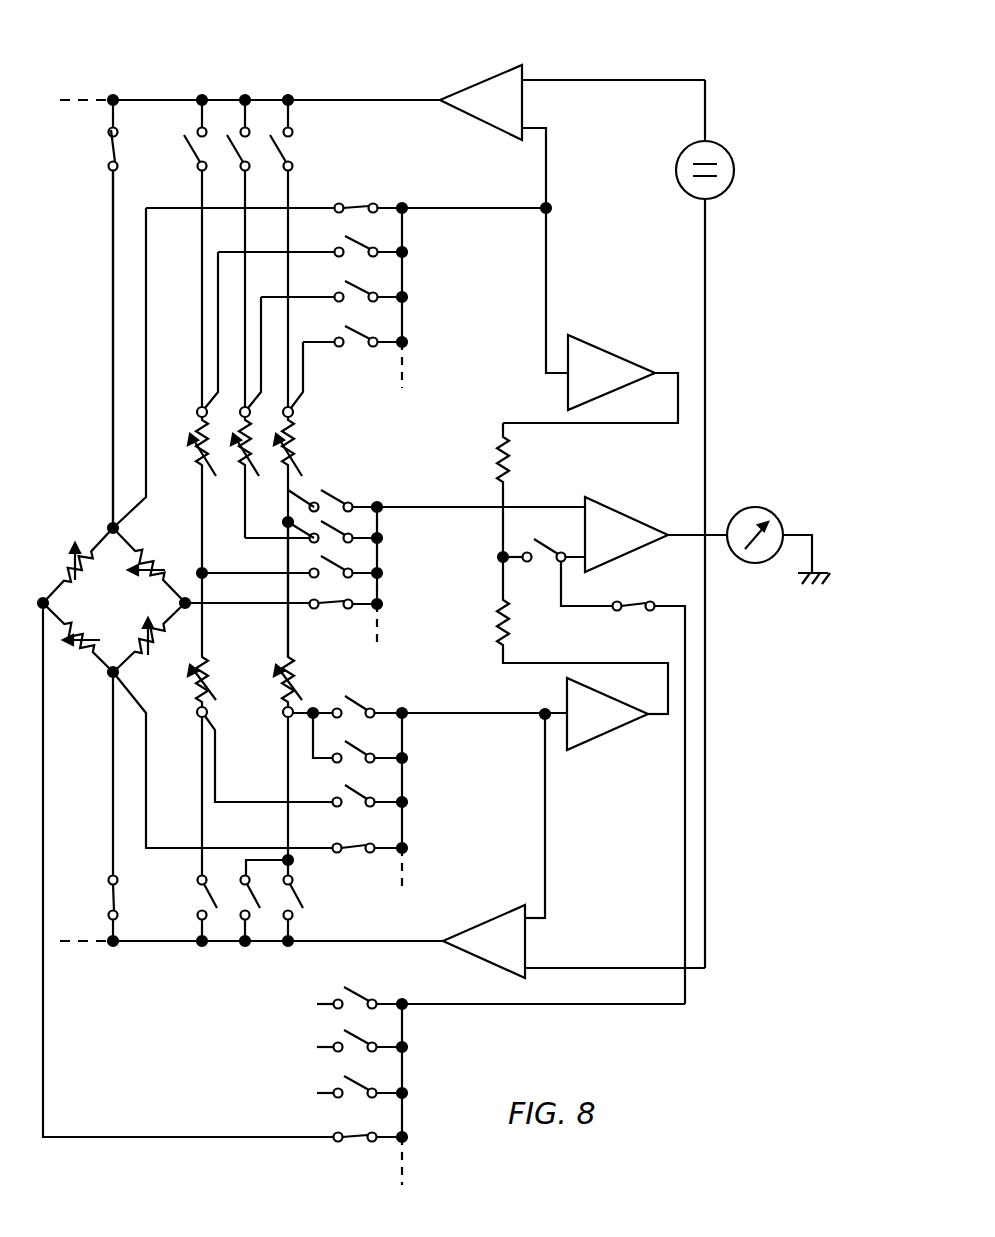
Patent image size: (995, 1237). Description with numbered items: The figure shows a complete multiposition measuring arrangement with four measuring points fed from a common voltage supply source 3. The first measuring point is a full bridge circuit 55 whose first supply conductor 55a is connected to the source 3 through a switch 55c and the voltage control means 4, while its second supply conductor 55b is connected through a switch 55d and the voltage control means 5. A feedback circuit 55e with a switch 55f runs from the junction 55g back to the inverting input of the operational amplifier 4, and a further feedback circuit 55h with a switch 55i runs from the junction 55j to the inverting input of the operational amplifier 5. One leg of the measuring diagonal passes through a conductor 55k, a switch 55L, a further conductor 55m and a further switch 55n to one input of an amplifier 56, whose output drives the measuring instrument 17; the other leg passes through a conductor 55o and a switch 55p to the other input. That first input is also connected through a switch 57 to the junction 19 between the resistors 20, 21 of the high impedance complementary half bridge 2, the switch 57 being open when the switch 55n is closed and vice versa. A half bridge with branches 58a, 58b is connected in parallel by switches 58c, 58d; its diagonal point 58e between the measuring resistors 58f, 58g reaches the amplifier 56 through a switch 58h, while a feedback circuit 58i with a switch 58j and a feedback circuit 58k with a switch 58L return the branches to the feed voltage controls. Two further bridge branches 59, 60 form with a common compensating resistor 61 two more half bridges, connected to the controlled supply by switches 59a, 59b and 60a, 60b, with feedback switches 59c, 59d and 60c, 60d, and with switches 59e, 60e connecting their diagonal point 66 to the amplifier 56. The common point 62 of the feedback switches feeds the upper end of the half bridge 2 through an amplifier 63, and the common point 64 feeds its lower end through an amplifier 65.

The high impedance complementary half bridge 2 is at (466, 468).
The voltage supply source 3 is at (722, 146).
The voltage control means 4 is at (470, 90).
The voltage control means 5 is at (490, 926).
The measuring instrument 17 is at (765, 512).
The junction 19 is at (500, 556).
The resistor 20 is at (510, 460).
The resistor 21 is at (494, 627).
The full bridge circuit 55 is at (122, 616).
The first supply conductor 55a is at (112, 262).
The second supply conductor 55b is at (112, 736).
The switch 55c is at (118, 148).
The switch 55d is at (110, 899).
The feedback circuit 55e is at (300, 206).
The switch 55f is at (360, 200).
The junction 55g is at (440, 506).
The further feedback circuit 55h is at (218, 846).
The switch 55i is at (346, 844).
The junction 55j is at (108, 676).
The conductor 55k is at (232, 1137).
The switch 55L is at (346, 1142).
The further conductor 55m is at (572, 1006).
The further switch 55n is at (632, 612).
The conductor 55o is at (262, 604).
The switch 55p is at (322, 608).
The amplifier 56 is at (604, 512).
The switch 57 is at (534, 546).
The branch 58a is at (201, 297).
The branch 58b is at (200, 768).
The switch 58c is at (205, 150).
The switch 58d is at (206, 896).
The diagonal point 58e is at (200, 570).
The measuring resistor 58f is at (196, 454).
The measuring resistor 58g is at (210, 674).
The switch 58h is at (346, 576).
The feedback circuit 58i is at (338, 248).
The switch 58j is at (346, 250).
The feedback circuit 58k is at (270, 800).
The switch 58L is at (346, 796).
The measuring bridge branch 59 is at (262, 250).
The switch 59a is at (248, 150).
The switch 59b is at (250, 896).
The switch 59c is at (346, 296).
The switch 59d is at (360, 756).
The switch 59e is at (350, 546).
The measuring bridge branch 60 is at (292, 298).
The switch 60a is at (294, 158).
The switch 60b is at (293, 892).
The switch 60c is at (346, 341).
The switch 60d is at (345, 710).
The switch 60e is at (326, 500).
The common compensating resistor 61 is at (294, 674).
The common point 62 is at (549, 208).
The amplifier 63 is at (598, 352).
The common point 64 is at (545, 710).
The amplifier 65 is at (598, 736).
The diagonal point 66 is at (285, 522).